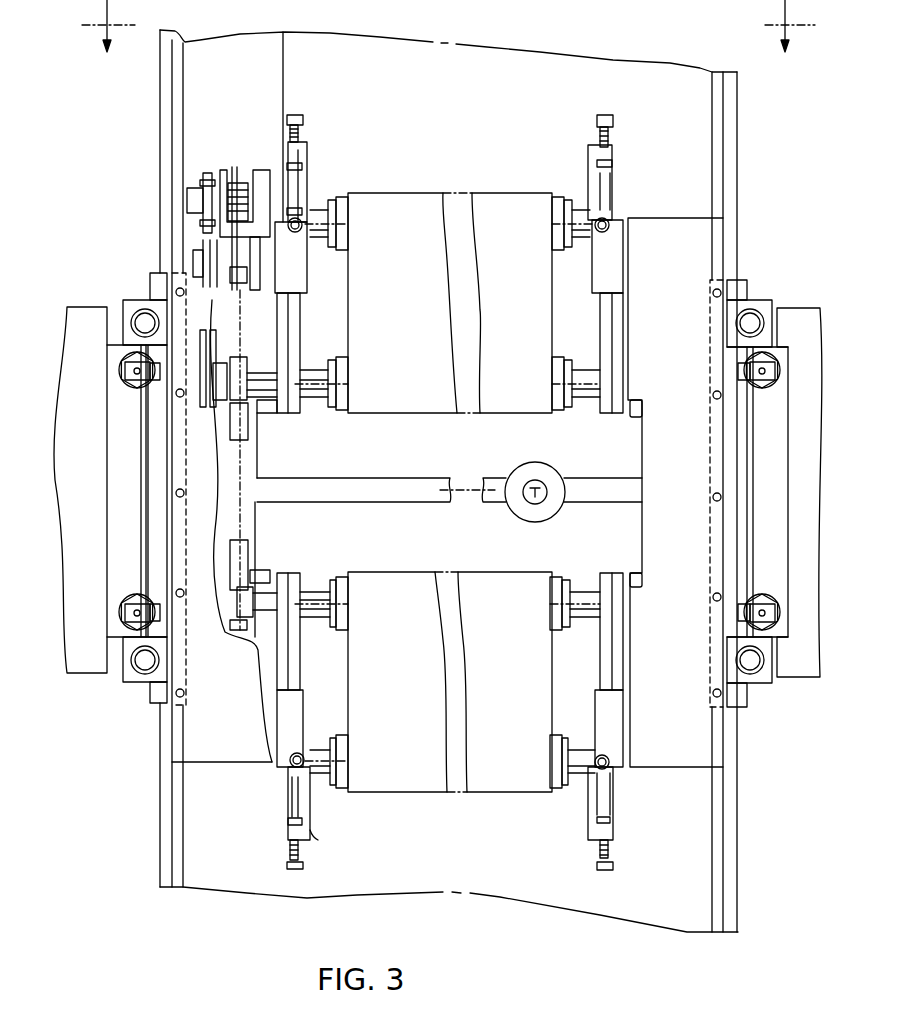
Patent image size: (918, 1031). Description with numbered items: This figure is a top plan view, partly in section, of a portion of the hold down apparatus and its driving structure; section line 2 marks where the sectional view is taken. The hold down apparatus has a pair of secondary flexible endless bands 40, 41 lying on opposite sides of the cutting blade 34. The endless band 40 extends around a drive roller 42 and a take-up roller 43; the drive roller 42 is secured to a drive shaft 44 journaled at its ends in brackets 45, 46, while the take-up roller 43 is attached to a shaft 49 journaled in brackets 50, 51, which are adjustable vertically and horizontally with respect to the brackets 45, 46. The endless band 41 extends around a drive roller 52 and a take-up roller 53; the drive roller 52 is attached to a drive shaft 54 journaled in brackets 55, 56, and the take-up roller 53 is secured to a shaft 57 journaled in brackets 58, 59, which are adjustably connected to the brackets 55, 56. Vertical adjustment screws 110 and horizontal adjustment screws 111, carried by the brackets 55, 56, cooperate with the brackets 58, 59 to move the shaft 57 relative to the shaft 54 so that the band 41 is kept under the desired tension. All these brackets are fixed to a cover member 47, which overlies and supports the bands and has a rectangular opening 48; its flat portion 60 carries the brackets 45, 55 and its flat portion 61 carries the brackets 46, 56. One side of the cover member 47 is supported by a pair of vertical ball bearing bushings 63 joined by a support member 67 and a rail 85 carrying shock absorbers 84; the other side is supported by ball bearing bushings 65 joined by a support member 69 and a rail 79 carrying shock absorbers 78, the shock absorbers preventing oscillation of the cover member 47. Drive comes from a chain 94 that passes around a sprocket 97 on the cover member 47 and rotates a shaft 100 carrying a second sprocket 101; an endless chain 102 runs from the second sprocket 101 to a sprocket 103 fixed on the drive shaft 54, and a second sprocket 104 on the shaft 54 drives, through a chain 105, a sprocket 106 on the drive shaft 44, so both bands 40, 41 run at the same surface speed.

The section line 2- 2 is at (448, 26).
The cutting blade 34 is at (525, 520).
The endless band 40 is at (408, 640).
The endless band 41 is at (400, 295).
The drive roller 42 is at (340, 573).
The take-up roller 43 is at (343, 752).
The drive shaft 44 is at (315, 592).
The bracket 45 is at (292, 573).
The bracket 46 is at (617, 573).
The cover member 47 is at (227, 768).
The rectangular opening 48 is at (640, 418).
The shaft 49 is at (323, 773).
The bracket 50 is at (312, 838).
The bracket 51 is at (590, 827).
The drive roller 52 is at (345, 412).
The take-up roller 53 is at (338, 205).
The drive shaft 54 is at (317, 397).
The bracket 55 is at (293, 413).
The bracket 56 is at (607, 413).
The shaft 57 is at (580, 215).
The bracket 58 is at (307, 152).
The bracket 59 is at (592, 152).
The flat portion 60 is at (180, 733).
The flat portion 61 is at (715, 750).
The ball bearing bushings 63 is at (138, 298).
The ball bearing bushings 65 is at (757, 300).
The support member 67 is at (147, 443).
The support member 69 is at (753, 480).
The shock absorber 78 is at (780, 357).
The rail 79 is at (790, 397).
The shock absorber 84 is at (122, 372).
The rail 85 is at (107, 458).
The chain 94 is at (235, 170).
The sprocket 97 is at (246, 182).
The shaft 100 is at (187, 202).
The second sprocket 101 is at (208, 190).
The endless chain 102 is at (215, 335).
The sprocket 103 is at (207, 388).
The second sprocket 104 is at (243, 358).
The chain 105 is at (248, 545).
The sprocket 106 is at (233, 623).
The vertical adjustment screws 110 is at (285, 773).
The horizontal adjustment screws 111 is at (298, 117).